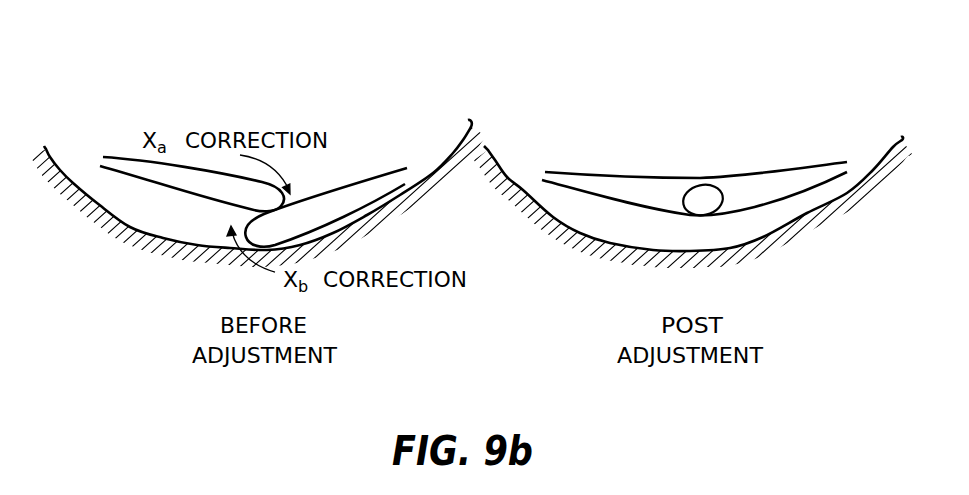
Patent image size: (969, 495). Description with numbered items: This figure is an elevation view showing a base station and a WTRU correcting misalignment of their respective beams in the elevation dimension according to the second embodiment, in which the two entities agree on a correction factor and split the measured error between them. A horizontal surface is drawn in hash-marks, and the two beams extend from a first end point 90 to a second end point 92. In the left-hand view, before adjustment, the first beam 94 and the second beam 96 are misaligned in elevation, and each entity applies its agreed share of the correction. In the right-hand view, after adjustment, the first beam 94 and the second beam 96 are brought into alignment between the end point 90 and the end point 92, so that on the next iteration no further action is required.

The first end point Xa of the beam 90 is at (75, 138).
The second end point Xb of the beam 92 is at (420, 143).
The first cantilever beam 94 is at (167, 192).
The second cantilever beam 96 is at (362, 178).